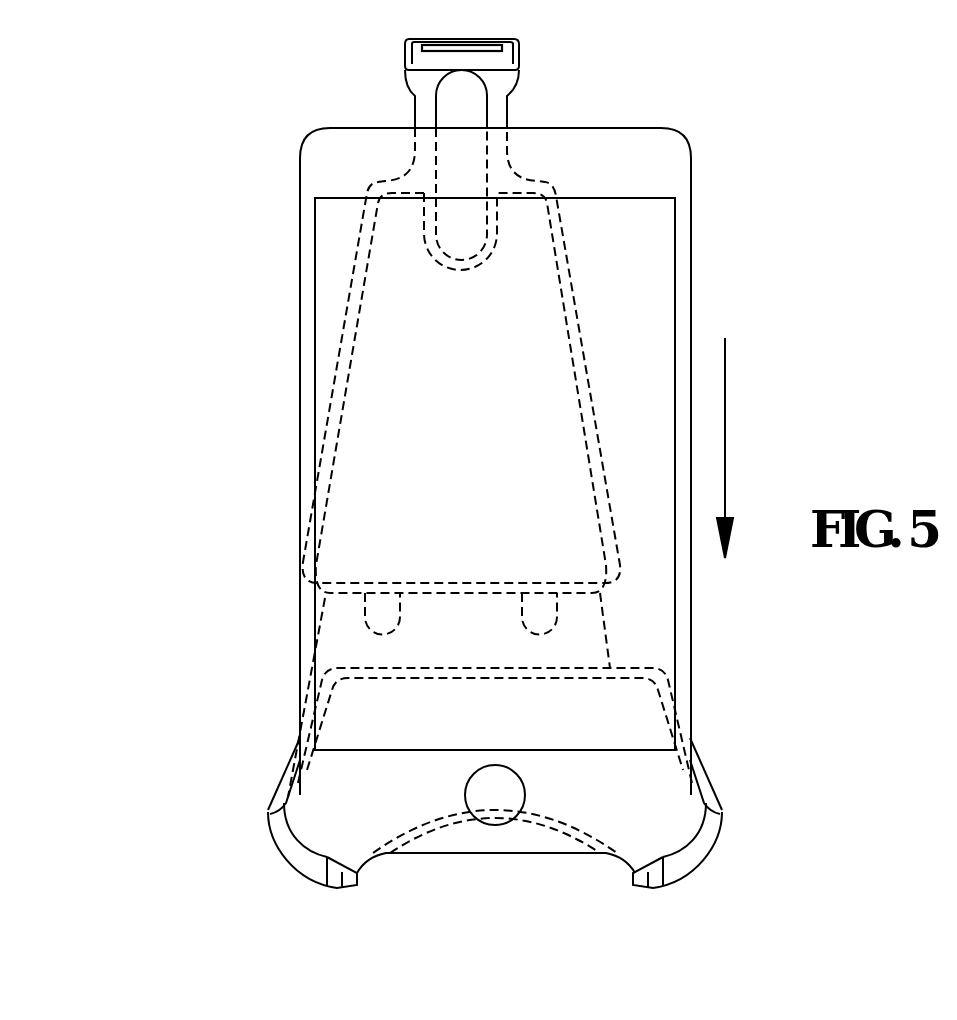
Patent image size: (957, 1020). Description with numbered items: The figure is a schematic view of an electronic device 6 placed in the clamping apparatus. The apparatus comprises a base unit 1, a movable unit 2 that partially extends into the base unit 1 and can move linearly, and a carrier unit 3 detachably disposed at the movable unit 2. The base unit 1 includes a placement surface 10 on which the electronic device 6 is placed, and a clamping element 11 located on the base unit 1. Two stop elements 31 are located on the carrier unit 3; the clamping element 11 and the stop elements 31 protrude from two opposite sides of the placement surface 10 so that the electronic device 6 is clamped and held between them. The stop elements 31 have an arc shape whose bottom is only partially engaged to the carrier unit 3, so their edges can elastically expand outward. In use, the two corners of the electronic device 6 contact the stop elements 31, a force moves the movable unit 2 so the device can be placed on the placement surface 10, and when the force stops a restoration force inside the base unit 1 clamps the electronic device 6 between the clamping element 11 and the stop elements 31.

The base unit 1 is at (498, 107).
The movable unit 2 is at (612, 628).
The carrier unit 3 is at (292, 778).
The electronic device 6 is at (653, 167).
The placement surface 10 is at (352, 383).
The clamping element 11 is at (437, 57).
The stop elements 31 is at (285, 838).